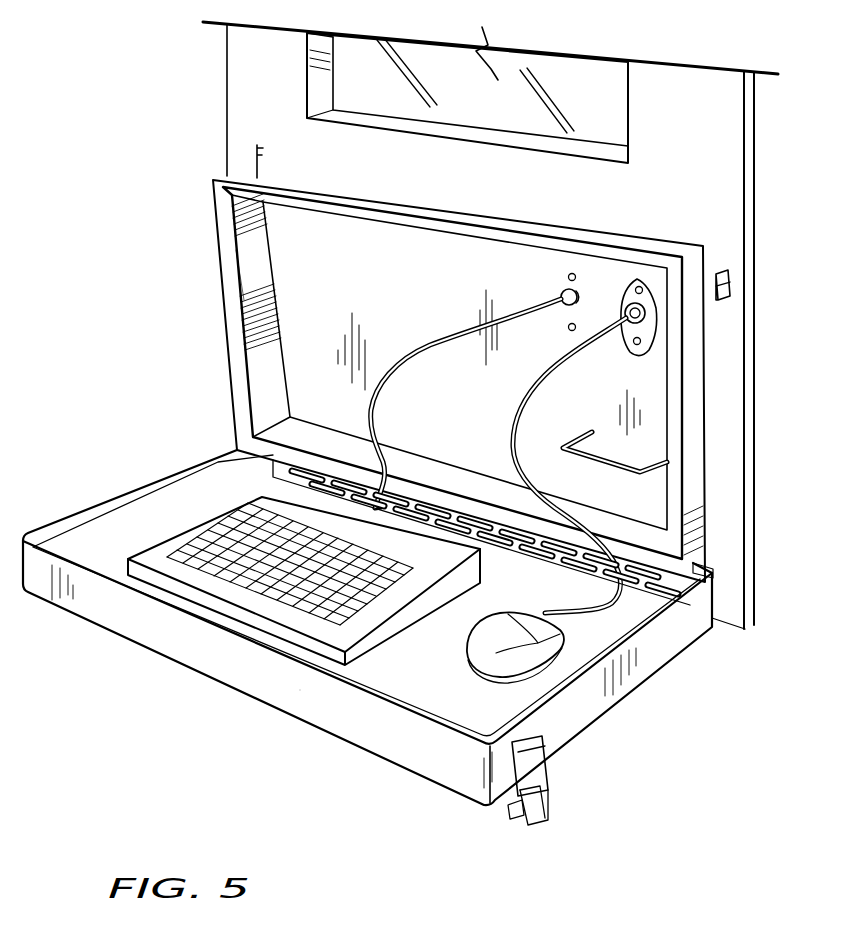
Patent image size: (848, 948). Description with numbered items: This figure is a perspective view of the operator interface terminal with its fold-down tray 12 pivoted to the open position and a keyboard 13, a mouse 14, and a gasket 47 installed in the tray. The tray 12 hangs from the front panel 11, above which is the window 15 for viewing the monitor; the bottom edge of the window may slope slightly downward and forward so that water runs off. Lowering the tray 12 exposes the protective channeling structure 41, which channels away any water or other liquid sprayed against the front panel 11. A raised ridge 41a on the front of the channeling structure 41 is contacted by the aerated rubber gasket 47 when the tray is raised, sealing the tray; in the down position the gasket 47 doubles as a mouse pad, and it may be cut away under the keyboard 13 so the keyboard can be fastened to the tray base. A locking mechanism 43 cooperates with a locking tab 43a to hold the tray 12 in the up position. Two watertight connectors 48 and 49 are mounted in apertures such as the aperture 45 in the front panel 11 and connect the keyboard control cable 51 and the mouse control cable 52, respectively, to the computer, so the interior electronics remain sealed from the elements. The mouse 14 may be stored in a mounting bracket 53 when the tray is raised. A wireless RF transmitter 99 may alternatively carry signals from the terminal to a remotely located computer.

The front panel 11 is at (226, 110).
The fold-down tray 12 is at (672, 641).
The keyboard 13 is at (415, 605).
The mouse 14 is at (545, 645).
The window 15 is at (632, 98).
The channeling structure 41 is at (432, 200).
The raised ridge 41a is at (232, 340).
The locking mechanism 43 is at (552, 770).
The locking tab 43a is at (735, 282).
The aperture 45 is at (550, 596).
The gasket 47 is at (395, 682).
The watertight connector 48 is at (563, 291).
The watertight connector 49 is at (624, 347).
The keyboard control cable 51 is at (440, 342).
The mouse control cable 52 is at (517, 413).
The mounting bracket 53 is at (608, 467).
The wireless RF transmitter 99 is at (263, 163).